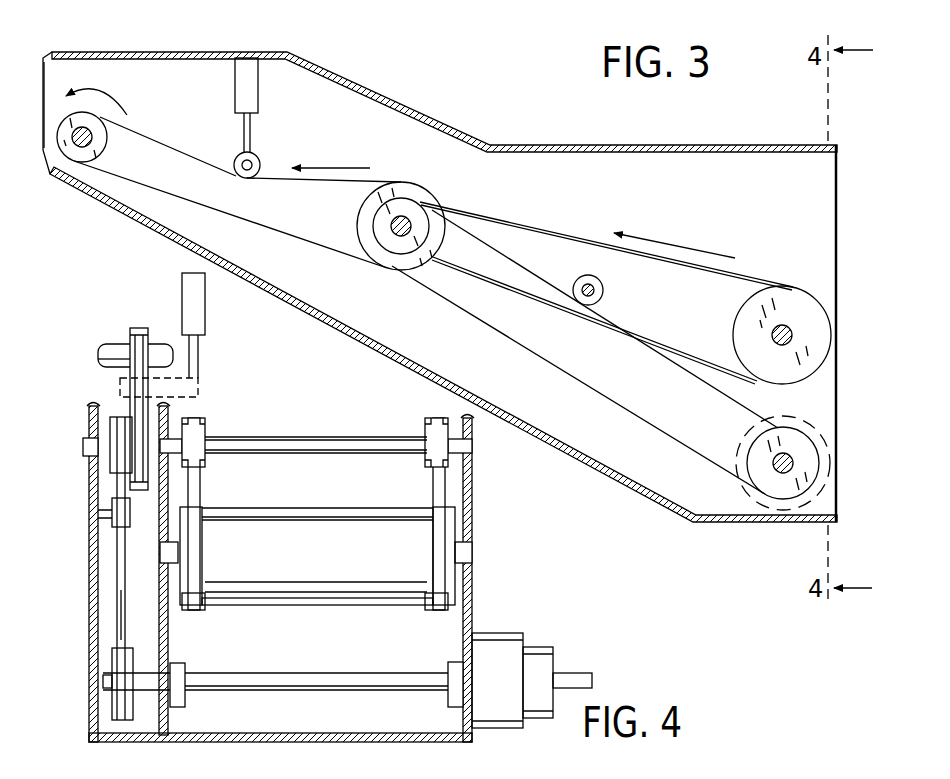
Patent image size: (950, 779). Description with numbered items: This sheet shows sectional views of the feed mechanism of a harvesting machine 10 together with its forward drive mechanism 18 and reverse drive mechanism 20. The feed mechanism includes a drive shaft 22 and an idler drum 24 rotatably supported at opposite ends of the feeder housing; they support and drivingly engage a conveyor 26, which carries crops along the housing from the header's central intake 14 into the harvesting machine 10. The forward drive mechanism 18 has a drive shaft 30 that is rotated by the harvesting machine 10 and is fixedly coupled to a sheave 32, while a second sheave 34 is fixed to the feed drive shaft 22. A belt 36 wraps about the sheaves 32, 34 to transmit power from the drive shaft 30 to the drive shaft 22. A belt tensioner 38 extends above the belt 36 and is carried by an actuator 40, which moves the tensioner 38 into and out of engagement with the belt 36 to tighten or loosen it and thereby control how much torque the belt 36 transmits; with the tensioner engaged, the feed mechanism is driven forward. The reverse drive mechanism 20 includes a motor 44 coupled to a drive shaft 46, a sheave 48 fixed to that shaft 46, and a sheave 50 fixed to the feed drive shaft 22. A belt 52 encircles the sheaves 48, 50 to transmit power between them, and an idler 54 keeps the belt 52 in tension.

In FIG. 3, the harvesting machine 10 is at (150, 50).
In FIG. 4, the harvesting machine 10 is at (73, 406).
In FIG. 3, the central intake 14 is at (838, 318).
In FIG. 3, the forward drive mechanism 18 is at (580, 232).
In FIG. 3, the reverse drive mechanism 20 is at (650, 434).
In FIG. 4, the reverse drive mechanism 20 is at (113, 575).
In FIG. 3, the drive shaft 22 is at (404, 268).
In FIG. 4, the drive shaft 22 is at (440, 492).
In FIG. 3, the idler drum 24 is at (806, 288).
In FIG. 3, the conveyor 26 is at (749, 283).
In FIG. 4, the conveyor 26 is at (208, 434).
In FIG. 3, the drive shaft 30 is at (70, 157).
In FIG. 4, the drive shaft 30 is at (117, 343).
In FIG. 3, the sheave 32 is at (57, 122).
In FIG. 4, the sheave 32 is at (130, 328).
In FIG. 3, the sheave 34 is at (407, 182).
In FIG. 4, the sheave 34 is at (125, 407).
In FIG. 3, the belt 36 is at (202, 160).
In FIG. 4, the belt 36 is at (108, 367).
In FIG. 3, the belt tensioner 38 is at (256, 146).
In FIG. 4, the belt tensioner 38 is at (198, 387).
In FIG. 3, the actuator 40 is at (259, 108).
In FIG. 4, the actuator 40 is at (182, 308).
In FIG. 4, the motor 44 is at (524, 625).
In FIG. 4, the drive shaft 46 is at (322, 672).
In FIG. 4, the sheave 48 is at (110, 663).
In FIG. 3, the sheave 50 is at (423, 212).
In FIG. 4, the sheave 50 is at (97, 458).
In FIG. 4, the belt 52 is at (125, 602).
In FIG. 3, the idler 54 is at (603, 299).
In FIG. 4, the idler 54 is at (180, 502).